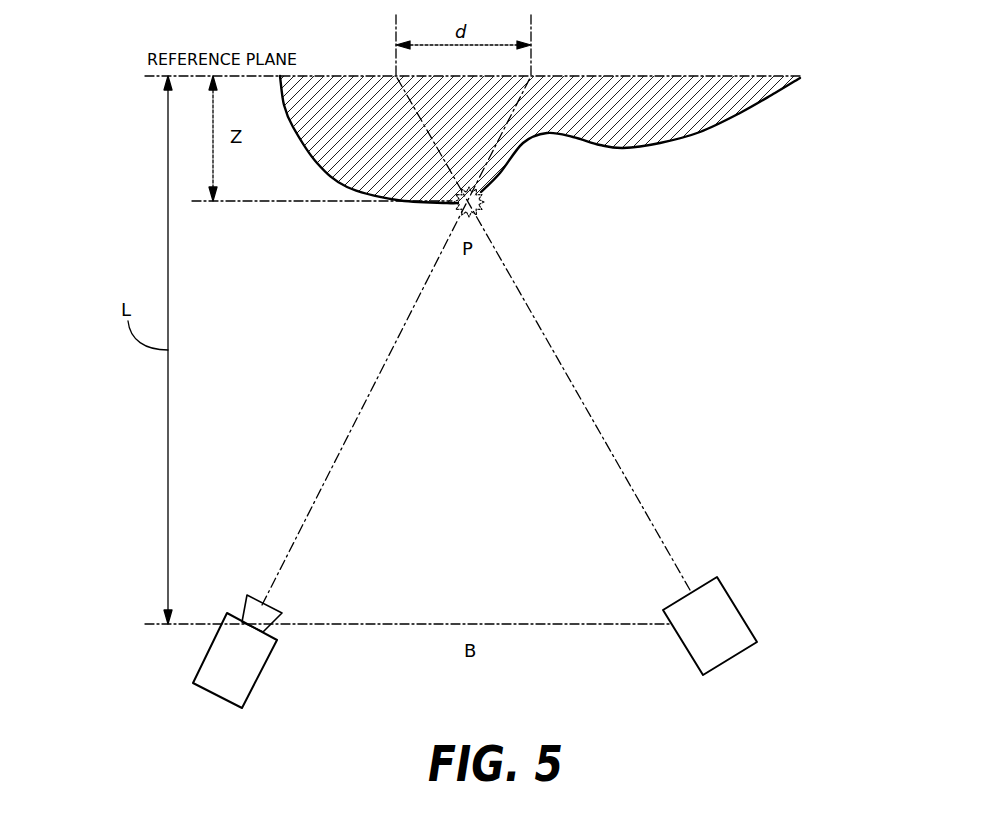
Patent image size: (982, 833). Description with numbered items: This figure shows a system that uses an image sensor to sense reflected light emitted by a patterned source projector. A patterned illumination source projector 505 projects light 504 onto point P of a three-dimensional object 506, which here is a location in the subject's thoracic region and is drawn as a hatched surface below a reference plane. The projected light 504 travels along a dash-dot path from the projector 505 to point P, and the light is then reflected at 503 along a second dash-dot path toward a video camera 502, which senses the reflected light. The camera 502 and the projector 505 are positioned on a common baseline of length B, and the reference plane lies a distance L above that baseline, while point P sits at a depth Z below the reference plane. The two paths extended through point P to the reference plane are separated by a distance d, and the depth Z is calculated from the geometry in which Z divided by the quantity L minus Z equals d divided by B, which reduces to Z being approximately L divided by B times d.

The video camera 502 is at (263, 672).
The reflected light 503 is at (323, 483).
The projected light 504 is at (630, 483).
The patterned illumination source projector 505 is at (738, 608).
The 3D object 506 is at (490, 183).